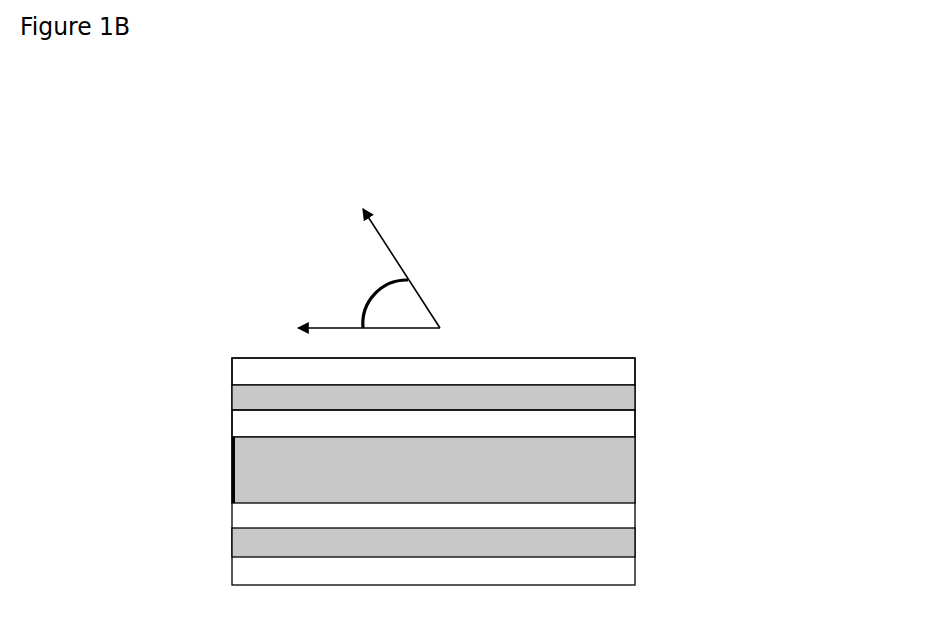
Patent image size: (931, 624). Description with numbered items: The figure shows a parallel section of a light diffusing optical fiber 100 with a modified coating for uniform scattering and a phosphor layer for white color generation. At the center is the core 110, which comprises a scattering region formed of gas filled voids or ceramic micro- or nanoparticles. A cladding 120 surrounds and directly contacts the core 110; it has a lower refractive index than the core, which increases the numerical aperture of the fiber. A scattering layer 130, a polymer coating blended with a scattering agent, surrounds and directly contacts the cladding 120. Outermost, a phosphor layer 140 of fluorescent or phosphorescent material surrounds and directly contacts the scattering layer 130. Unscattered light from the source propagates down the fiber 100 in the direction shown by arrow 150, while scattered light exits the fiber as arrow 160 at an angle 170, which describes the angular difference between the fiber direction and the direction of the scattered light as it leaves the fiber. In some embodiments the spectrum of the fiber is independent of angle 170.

The light diffusing optical fiber 100 is at (598, 309).
The core 110 is at (622, 473).
The cladding 120 is at (622, 427).
The scattering layer 130 is at (622, 398).
The phosphor layer 140 is at (622, 367).
The arrow 150 is at (346, 314).
The arrow 160 is at (401, 260).
The angle 170 is at (370, 303).